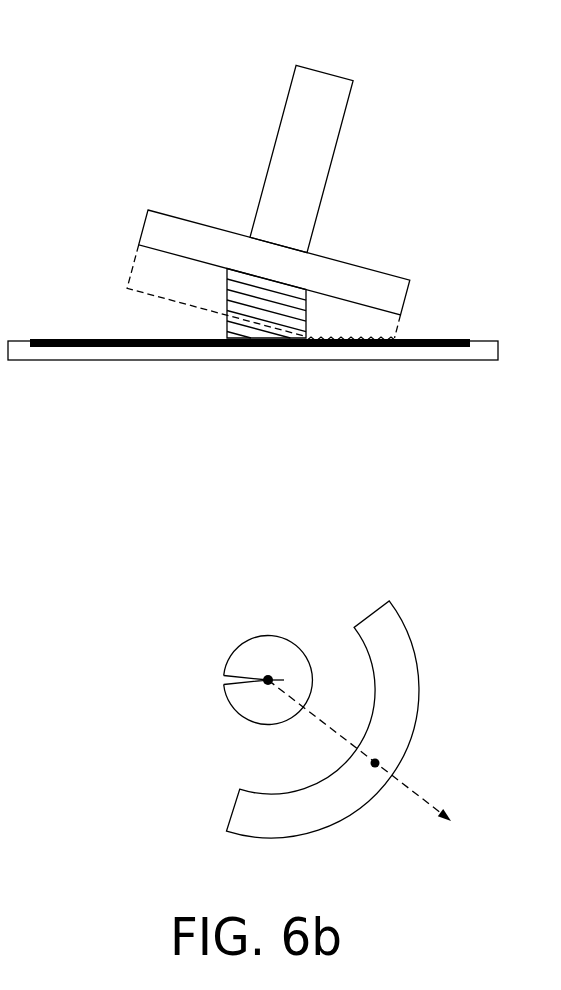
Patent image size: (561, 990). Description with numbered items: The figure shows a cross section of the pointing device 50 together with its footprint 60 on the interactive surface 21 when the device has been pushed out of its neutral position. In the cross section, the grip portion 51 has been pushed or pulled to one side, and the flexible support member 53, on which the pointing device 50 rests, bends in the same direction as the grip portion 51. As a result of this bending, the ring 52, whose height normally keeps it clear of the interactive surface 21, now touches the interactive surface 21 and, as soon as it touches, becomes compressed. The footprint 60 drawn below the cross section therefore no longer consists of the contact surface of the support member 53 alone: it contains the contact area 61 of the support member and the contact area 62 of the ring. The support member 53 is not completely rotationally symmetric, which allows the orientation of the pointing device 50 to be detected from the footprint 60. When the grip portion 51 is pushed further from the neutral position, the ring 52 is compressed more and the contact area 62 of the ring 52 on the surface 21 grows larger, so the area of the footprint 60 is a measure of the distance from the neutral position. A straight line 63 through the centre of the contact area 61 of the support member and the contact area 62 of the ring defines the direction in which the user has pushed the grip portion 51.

The pointing device 50 is at (106, 98).
The grip portion 51 is at (337, 147).
The ring 52 is at (132, 270).
The support member 53 is at (262, 312).
The interactive surface 21 is at (413, 346).
The footprint 60 is at (158, 626).
The contact area of the support member 61 is at (272, 637).
The contact area of the ring 62 is at (231, 811).
The straight line 63 is at (423, 796).